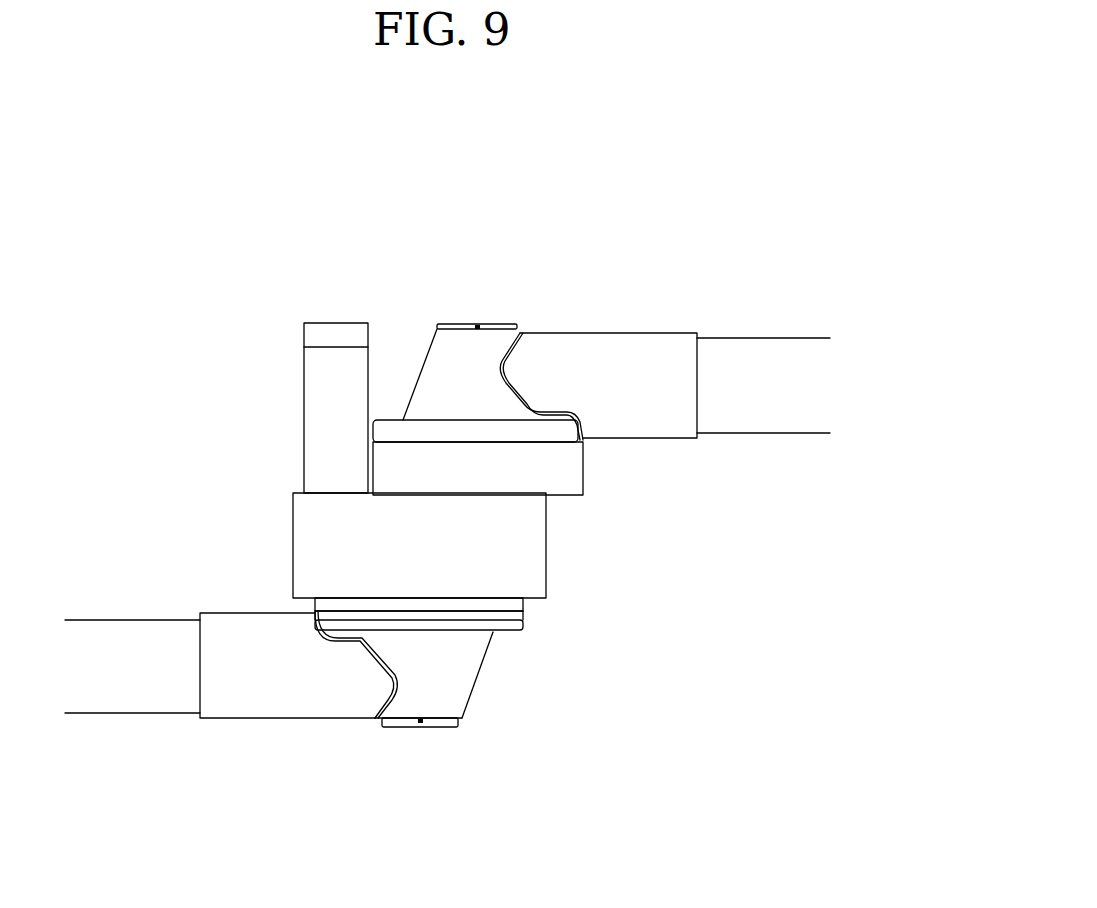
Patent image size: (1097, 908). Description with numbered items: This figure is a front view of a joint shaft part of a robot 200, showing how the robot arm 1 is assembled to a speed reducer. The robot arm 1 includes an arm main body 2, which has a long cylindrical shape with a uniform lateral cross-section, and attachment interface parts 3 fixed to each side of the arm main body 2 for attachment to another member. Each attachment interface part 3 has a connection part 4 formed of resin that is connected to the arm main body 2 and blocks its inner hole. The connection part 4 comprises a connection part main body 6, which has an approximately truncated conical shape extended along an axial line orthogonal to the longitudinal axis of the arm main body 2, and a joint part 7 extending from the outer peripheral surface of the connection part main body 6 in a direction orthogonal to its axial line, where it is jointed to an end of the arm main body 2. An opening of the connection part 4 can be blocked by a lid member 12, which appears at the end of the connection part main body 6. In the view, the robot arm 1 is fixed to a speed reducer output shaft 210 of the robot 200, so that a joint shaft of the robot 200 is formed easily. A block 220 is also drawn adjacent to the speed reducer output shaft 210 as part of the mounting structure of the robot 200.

The robot arm 1 is at (456, 240).
The arm main body 2 is at (783, 328).
The attachment interface part 3 is at (411, 315).
The connection part 4 is at (417, 370).
The connection part main body 6 is at (430, 402).
The joint part 7 is at (570, 333).
The lid member 12 is at (498, 324).
The robot 200 is at (150, 342).
The speed reducer output shaft 210 is at (523, 605).
The base block 220 is at (548, 545).